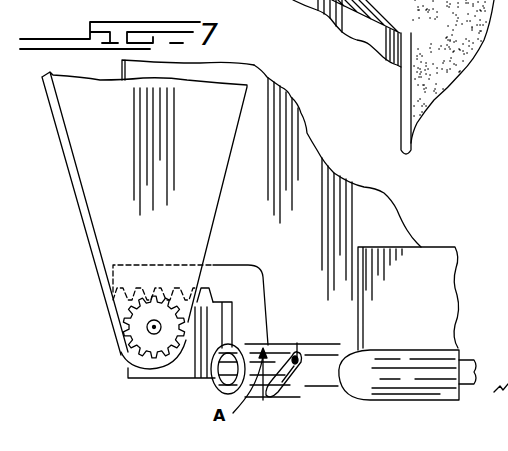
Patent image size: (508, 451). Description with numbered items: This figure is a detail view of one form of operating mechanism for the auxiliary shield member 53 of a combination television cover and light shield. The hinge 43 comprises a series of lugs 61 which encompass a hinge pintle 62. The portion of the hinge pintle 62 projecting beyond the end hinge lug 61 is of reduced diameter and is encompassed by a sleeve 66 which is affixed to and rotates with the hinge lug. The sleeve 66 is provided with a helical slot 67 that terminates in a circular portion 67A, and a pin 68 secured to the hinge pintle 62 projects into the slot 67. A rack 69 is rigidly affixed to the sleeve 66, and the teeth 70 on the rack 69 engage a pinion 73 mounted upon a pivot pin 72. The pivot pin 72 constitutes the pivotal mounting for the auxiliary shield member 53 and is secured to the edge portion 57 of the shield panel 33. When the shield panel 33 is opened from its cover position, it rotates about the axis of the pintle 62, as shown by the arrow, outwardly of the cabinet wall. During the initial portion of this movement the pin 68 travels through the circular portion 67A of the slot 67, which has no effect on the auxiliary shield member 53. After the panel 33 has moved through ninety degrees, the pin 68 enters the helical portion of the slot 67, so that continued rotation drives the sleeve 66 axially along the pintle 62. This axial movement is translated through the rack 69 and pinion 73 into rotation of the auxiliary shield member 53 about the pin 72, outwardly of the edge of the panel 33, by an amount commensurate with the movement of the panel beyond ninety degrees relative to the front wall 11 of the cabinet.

The front wall 11 is at (294, 7).
The shield panel 33 is at (444, 40).
The hinge 43 is at (429, 385).
The auxiliary shield member 53 is at (200, 208).
The edge portion 57 is at (198, 362).
The hinge lug 61 is at (406, 355).
The hinge pintle 62 is at (471, 362).
The sleeve 66 is at (321, 349).
The helical slot 67 is at (293, 396).
The circular portion 67A is at (298, 363).
The pin 68 is at (266, 400).
The rack 69 is at (243, 285).
The teeth 70 is at (197, 292).
The pivot pin 72 is at (155, 334).
The pinion 73 is at (157, 282).